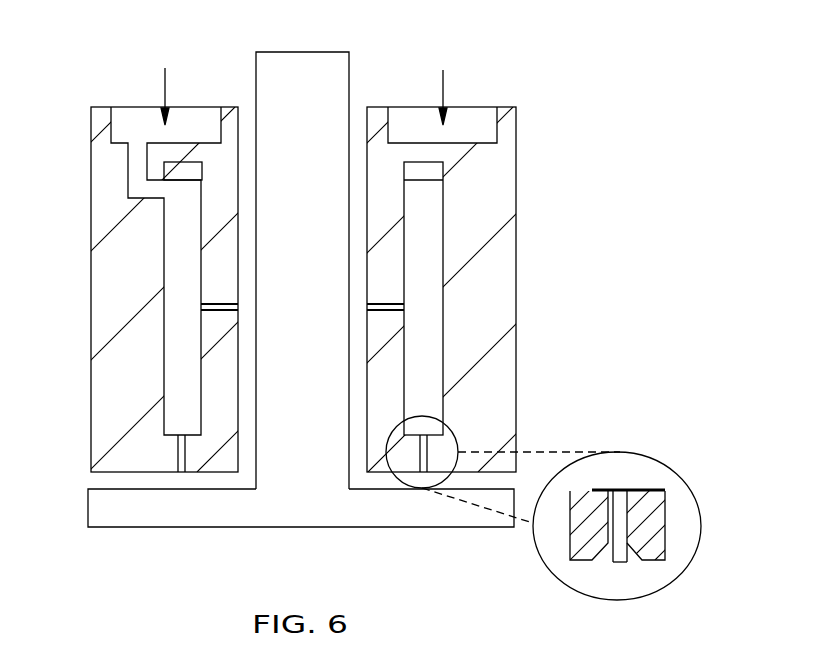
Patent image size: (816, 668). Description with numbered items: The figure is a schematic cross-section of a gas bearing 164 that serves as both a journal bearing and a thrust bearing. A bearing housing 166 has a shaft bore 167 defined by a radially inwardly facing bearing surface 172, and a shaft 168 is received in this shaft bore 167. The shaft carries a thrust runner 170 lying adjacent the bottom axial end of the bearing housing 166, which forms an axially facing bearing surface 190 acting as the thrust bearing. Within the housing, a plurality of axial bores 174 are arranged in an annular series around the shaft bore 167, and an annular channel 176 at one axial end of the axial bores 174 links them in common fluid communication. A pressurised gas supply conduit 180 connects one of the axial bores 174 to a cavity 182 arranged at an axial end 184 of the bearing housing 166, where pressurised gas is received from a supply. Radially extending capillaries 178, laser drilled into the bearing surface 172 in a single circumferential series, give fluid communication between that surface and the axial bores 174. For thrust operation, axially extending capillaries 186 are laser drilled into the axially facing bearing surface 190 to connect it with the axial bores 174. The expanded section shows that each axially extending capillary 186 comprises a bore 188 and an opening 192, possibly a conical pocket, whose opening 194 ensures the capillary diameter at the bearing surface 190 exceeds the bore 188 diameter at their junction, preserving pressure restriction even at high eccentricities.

The gas bearing 164 is at (575, 85).
The bearing housing 166 is at (502, 250).
The shaft bore 167 is at (247, 118).
The shaft 168 is at (337, 70).
The thrust runner 170 is at (378, 510).
The bearing surface 172 is at (368, 127).
The axial bores 174 is at (442, 307).
The annular channel 176 is at (447, 170).
The radially extending capillaries 178 is at (380, 302).
The pressurised gas supply conduit 180 is at (137, 170).
The cavity 182 is at (140, 115).
The axial end 184 is at (100, 107).
The axially extending capillaries 186 is at (443, 442).
The bore 188 is at (613, 512).
The axially facing bearing surface 190 is at (465, 472).
The opening 192 is at (613, 562).
The opening 194 is at (658, 552).